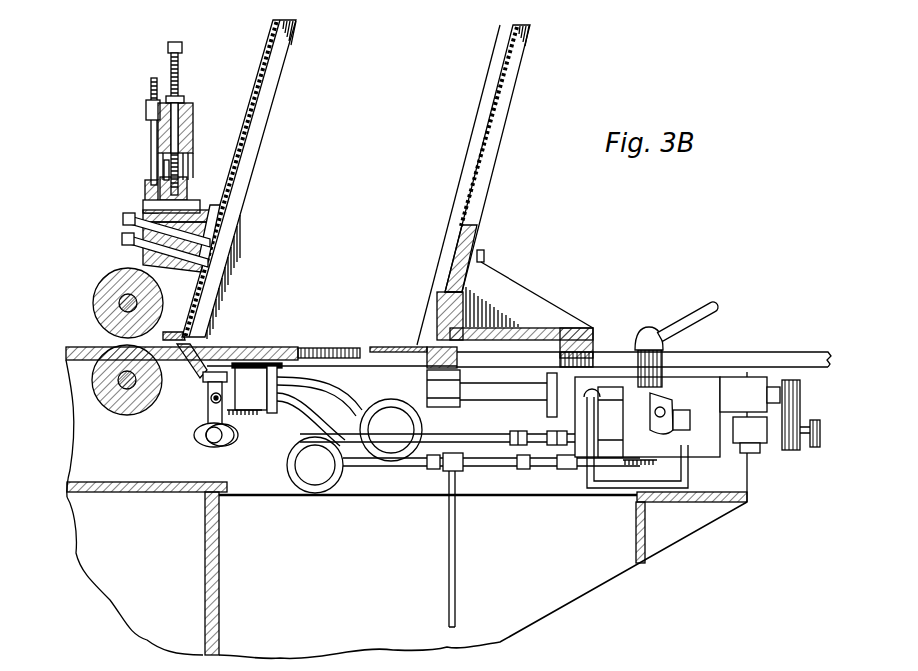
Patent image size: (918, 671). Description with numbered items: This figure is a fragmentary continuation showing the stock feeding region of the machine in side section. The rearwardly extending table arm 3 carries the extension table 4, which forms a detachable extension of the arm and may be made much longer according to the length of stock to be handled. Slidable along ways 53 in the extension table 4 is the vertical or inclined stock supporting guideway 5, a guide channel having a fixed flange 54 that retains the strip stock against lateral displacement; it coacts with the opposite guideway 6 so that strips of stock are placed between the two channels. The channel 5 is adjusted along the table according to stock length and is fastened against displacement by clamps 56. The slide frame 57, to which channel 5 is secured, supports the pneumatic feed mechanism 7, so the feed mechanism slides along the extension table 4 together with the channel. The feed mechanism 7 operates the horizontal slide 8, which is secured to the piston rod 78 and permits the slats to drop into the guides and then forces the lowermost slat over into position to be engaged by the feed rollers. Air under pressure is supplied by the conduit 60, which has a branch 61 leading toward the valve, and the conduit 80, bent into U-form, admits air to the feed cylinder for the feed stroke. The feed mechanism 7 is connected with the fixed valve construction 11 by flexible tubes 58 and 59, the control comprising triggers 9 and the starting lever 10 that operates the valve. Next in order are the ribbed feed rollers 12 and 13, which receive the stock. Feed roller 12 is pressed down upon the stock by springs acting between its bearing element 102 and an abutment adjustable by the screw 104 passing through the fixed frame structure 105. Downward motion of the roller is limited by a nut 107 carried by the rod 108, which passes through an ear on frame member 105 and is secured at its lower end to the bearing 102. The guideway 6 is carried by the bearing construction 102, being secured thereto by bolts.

The table arm 3 is at (78, 347).
The extension table 4 is at (803, 357).
The stock supporting guideway 5 is at (505, 118).
The guideway 6 is at (268, 52).
The pneumatic feed mechanism 7 is at (745, 465).
The horizontal slide 8 is at (395, 347).
The triggers 9 is at (190, 360).
The starting lever 10 is at (203, 443).
The valve construction 11 is at (280, 385).
The feed roller 12 is at (118, 284).
The feed roller 13 is at (113, 411).
The ways 53 is at (727, 367).
The fixed flange 54 is at (483, 107).
The clamps 56 is at (697, 312).
The slide frame 57 is at (545, 325).
The flexible tube 58 is at (345, 410).
The flexible tube 59 is at (287, 458).
The conduit 60 is at (451, 515).
The branch 61 is at (484, 466).
The piston rod 78 is at (522, 393).
The conduit 80 is at (605, 492).
The bearing element 102 is at (145, 198).
The screw 104 is at (178, 41).
The fixed frame structure 105 is at (193, 116).
The nut 107 is at (147, 100).
The rod 108 is at (150, 147).